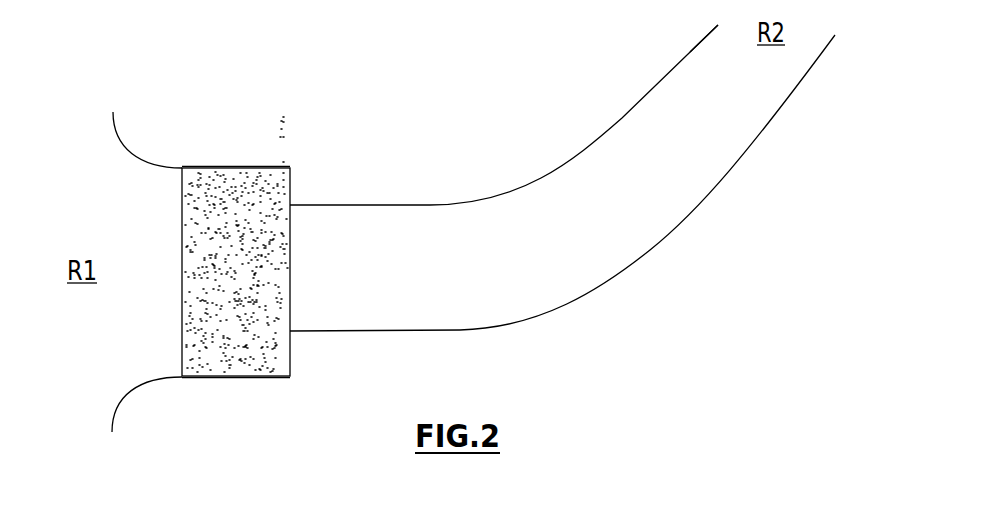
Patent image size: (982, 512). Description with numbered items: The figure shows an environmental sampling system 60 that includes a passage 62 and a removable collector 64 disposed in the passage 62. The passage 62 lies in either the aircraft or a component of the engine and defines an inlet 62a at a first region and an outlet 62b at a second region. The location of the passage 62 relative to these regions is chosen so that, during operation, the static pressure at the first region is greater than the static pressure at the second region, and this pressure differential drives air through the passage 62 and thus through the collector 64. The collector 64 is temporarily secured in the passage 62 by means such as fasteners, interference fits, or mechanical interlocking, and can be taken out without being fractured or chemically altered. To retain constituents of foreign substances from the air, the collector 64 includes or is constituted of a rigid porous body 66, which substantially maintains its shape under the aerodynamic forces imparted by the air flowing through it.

The system 60 is at (436, 148).
The passage 62 is at (329, 199).
The inlet 62a is at (113, 134).
The outlet 62b is at (828, 48).
The removable collector 64 is at (178, 347).
The rigid porous body 66 is at (273, 316).